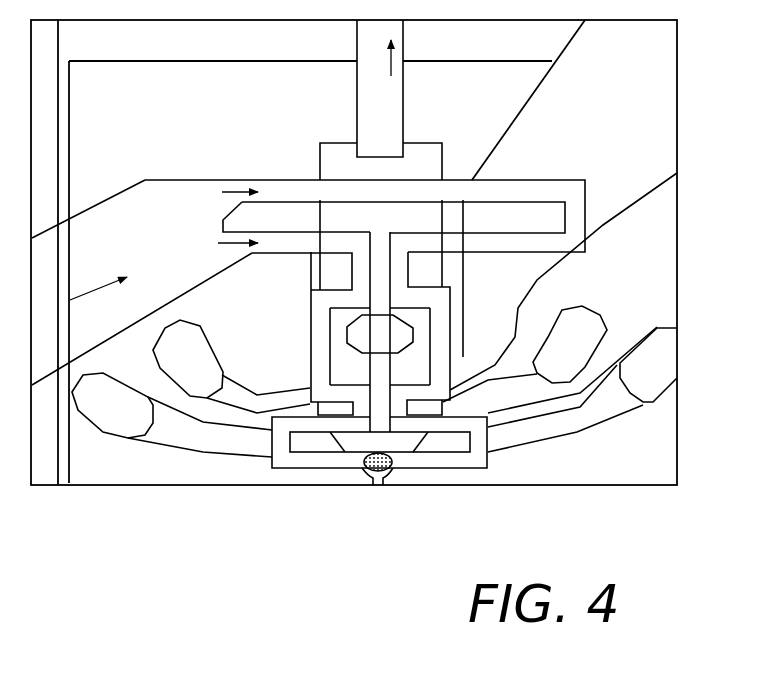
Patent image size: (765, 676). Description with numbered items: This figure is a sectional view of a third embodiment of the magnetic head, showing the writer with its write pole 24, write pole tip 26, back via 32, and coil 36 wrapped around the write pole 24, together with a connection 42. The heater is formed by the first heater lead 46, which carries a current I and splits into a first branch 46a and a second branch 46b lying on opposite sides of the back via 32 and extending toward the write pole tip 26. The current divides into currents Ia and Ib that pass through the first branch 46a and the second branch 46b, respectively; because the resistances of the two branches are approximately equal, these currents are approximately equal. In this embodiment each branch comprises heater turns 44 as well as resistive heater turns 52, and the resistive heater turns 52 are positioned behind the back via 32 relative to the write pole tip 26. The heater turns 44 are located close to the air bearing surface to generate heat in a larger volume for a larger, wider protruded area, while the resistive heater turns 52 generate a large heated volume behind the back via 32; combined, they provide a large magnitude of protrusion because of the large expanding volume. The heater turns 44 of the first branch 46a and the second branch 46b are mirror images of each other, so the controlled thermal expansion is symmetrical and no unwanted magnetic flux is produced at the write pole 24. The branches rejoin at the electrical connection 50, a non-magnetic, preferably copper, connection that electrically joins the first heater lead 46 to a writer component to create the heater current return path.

The write pole 24 is at (320, 139).
The connection 42 is at (387, 88).
The resistive heater turns 52 is at (483, 187).
The first heater lead 46 is at (122, 213).
The first branch 46a is at (318, 323).
The second branch 46b is at (438, 323).
The coil 36 is at (648, 380).
The back via 32 is at (353, 343).
The heater turns 44 is at (308, 463).
The electrical connection 50 is at (366, 468).
The write pole tip 26 is at (379, 485).